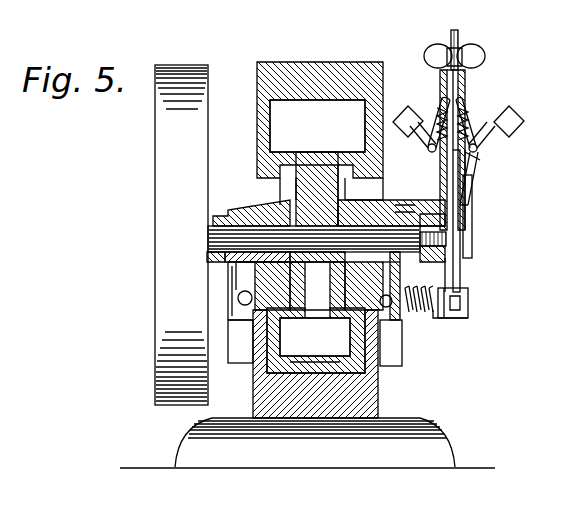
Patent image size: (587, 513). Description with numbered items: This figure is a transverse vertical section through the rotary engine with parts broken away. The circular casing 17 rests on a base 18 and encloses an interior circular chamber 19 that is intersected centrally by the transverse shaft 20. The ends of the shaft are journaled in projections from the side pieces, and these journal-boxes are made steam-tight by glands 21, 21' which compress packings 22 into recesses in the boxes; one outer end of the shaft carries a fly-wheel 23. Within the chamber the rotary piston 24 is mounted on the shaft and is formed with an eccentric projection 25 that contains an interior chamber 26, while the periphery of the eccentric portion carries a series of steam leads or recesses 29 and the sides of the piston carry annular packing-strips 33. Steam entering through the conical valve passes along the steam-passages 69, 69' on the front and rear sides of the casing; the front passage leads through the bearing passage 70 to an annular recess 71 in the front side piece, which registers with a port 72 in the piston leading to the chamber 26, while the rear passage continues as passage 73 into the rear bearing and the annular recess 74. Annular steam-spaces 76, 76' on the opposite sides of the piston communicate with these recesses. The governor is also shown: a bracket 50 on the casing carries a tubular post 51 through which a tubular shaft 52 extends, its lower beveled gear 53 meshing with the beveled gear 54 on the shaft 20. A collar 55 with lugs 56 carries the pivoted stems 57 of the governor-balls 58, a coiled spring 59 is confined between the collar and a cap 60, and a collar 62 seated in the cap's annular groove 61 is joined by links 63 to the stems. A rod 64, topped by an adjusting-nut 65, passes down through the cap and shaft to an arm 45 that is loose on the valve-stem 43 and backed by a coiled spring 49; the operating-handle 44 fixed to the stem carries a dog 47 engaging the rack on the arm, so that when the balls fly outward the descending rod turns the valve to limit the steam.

The circular casing 17 is at (345, 62).
The base 18 is at (440, 435).
The interior circular chamber 19 is at (317, 126).
The transverse shaft 20 is at (220, 238).
The gland 21 is at (387, 289).
The gland 21' is at (228, 272).
The packing 22 is at (405, 225).
The fly-wheel 23 is at (181, 235).
The rotary piston 24 is at (322, 166).
The eccentric projection 25 is at (283, 380).
The interior chamber 26 is at (315, 337).
The steam leads 29 is at (332, 374).
The annular packing-strip 33 is at (240, 358).
The valve-stem 43 is at (420, 312).
The operating-handle 44 is at (461, 266).
The arm 45 is at (460, 318).
The dog 47 is at (473, 240).
The coiled spring 49 is at (430, 318).
The bracket 50 is at (397, 200).
The tubular post 51 is at (472, 178).
The tubular shaft 52 is at (470, 192).
The beveled gear 53 is at (470, 220).
The beveled gear 54 is at (405, 260).
The collar 55 is at (481, 160).
The lug 56 is at (430, 152).
The stem 57 is at (420, 148).
The governor-ball 58 is at (412, 112).
The coiled spring 59 is at (470, 125).
The cap 60 is at (436, 60).
The annular groove 61 is at (440, 102).
The collar 62 is at (462, 100).
The link 63 is at (420, 112).
The rod 64 is at (459, 42).
The adjusting-nut 65 is at (441, 50).
The steam-passage 69 is at (397, 325).
The steam-passage 69' is at (184, 314).
The passage 70 is at (316, 339).
The annular recess 71 is at (364, 189).
The port 72 is at (317, 286).
The passage 73 is at (230, 300).
The annular recess 74 is at (254, 202).
The annular steam-space 76 is at (349, 178).
The annular steam-space 76' is at (195, 332).